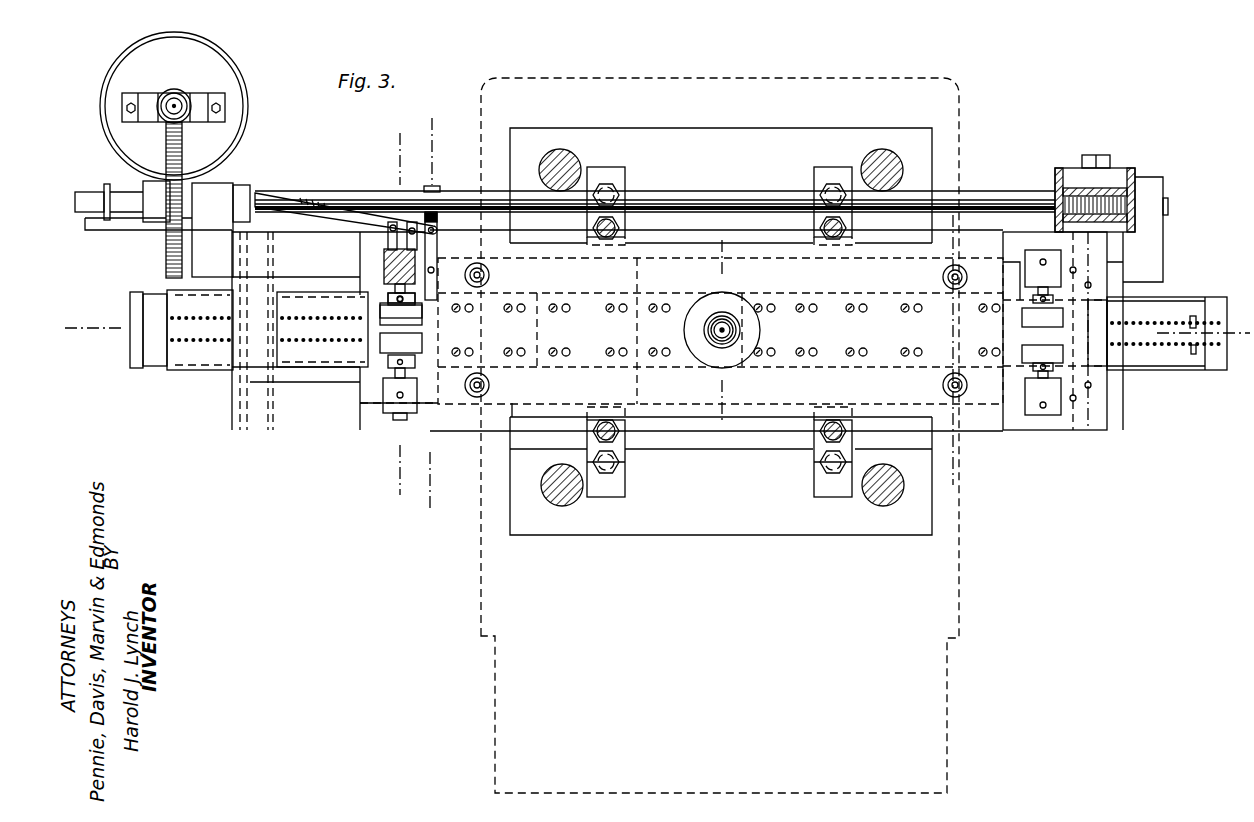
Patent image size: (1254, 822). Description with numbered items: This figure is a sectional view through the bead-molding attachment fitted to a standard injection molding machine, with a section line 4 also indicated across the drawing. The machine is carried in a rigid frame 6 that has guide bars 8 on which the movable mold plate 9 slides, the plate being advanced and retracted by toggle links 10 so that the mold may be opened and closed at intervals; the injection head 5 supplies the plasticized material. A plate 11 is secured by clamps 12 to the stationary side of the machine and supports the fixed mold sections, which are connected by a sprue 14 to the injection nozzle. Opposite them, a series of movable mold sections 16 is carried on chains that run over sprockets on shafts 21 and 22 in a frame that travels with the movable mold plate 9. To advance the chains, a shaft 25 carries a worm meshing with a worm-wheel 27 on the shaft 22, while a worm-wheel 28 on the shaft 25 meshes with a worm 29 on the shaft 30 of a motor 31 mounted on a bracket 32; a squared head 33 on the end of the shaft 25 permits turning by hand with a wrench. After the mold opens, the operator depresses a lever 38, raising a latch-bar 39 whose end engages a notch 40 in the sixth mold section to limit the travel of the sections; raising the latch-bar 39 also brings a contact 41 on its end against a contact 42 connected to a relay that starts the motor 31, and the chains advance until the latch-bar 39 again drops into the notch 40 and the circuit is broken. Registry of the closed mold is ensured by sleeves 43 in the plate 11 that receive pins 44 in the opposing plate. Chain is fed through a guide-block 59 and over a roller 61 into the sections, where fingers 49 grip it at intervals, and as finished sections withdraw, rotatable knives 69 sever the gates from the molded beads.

The section line 4- 4 is at (85, 326).
The injection head 5 is at (951, 222).
The rigid frame 6 is at (962, 522).
The guide bars 8 is at (398, 168).
The movable mold plate 9 is at (430, 162).
The toggle links 10 is at (720, 248).
The plate 11 is at (775, 400).
The clamps 12 is at (626, 222).
The sprue 14 is at (740, 330).
The movable mold sections 16 is at (1165, 357).
The shaft 21 is at (272, 235).
The shaft 22 is at (1095, 156).
The shaft 25 is at (742, 184).
The worm-wheel 27 is at (1136, 198).
The worm-wheel 28 is at (166, 248).
The worm 29 is at (187, 93).
The shaft 30 is at (180, 105).
The motor 31 is at (217, 58).
The bracket 32 is at (223, 184).
The squared head 33 is at (91, 193).
The lever 38 is at (299, 197).
The latch-bar 39 is at (438, 247).
The notch 40 is at (471, 313).
The contact 41 is at (438, 222).
The contact 42 is at (436, 190).
The sleeves 43 is at (490, 276).
The pins 44 is at (465, 275).
The fingers 49 is at (1195, 355).
The guide-block 59 is at (1095, 318).
The roller 61 is at (1022, 351).
The rotatable knives 69 is at (428, 346).